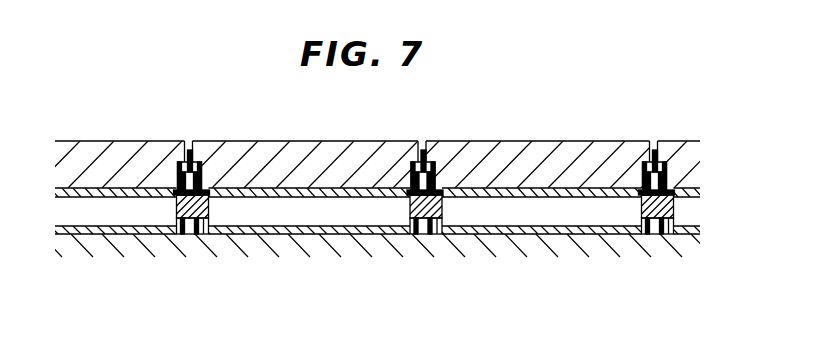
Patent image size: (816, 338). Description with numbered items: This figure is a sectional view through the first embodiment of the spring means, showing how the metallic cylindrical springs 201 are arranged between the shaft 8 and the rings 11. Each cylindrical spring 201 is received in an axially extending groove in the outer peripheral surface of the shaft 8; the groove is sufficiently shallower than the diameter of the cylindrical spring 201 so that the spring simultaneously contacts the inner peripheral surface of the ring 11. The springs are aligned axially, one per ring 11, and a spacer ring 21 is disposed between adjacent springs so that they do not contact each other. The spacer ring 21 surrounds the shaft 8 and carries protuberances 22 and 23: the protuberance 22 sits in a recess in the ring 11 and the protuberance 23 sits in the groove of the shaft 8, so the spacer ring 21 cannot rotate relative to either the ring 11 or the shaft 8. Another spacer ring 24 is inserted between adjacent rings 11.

The ring 11 is at (226, 156).
The cylindrical spring 201 is at (290, 191).
The shaft 8 is at (368, 290).
The protuberance 22 is at (393, 153).
The spacer ring 24 is at (425, 150).
The spacer ring 21 is at (441, 206).
The protuberance 23 is at (433, 225).